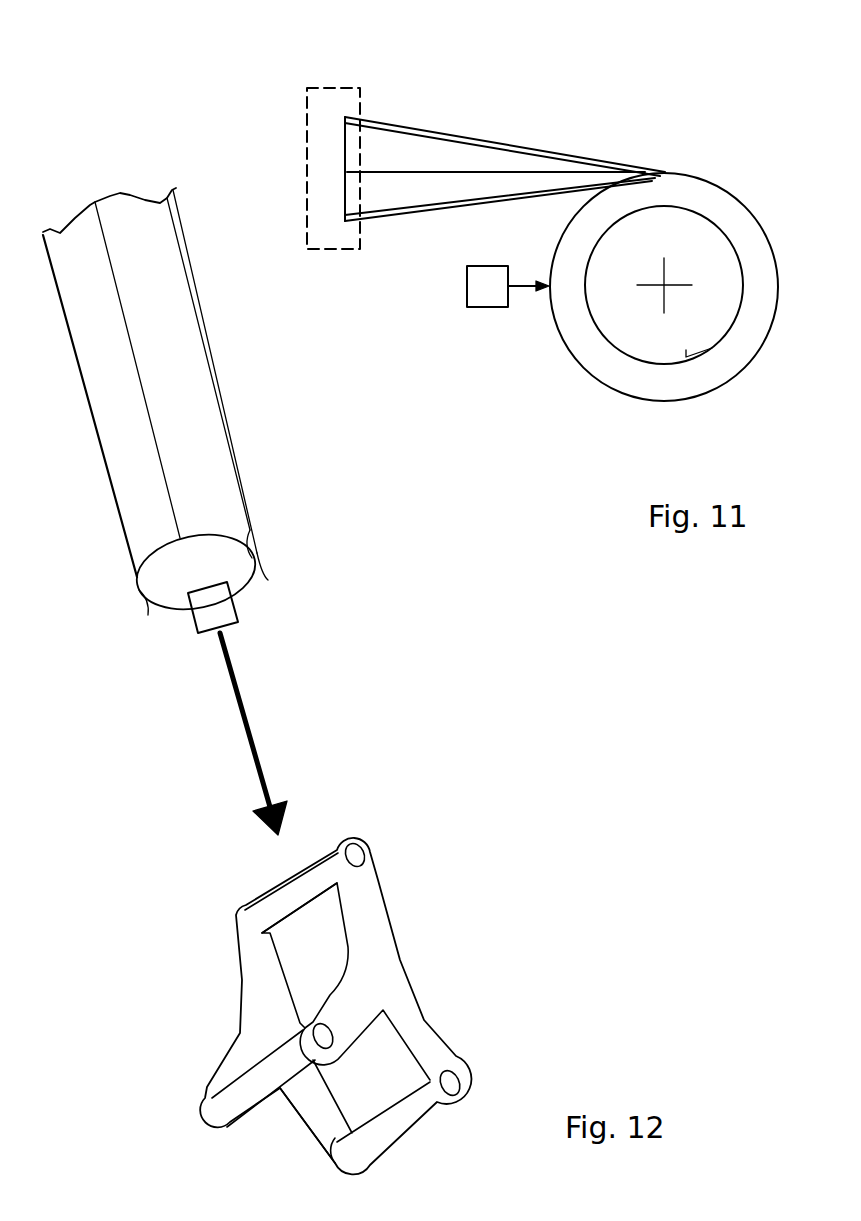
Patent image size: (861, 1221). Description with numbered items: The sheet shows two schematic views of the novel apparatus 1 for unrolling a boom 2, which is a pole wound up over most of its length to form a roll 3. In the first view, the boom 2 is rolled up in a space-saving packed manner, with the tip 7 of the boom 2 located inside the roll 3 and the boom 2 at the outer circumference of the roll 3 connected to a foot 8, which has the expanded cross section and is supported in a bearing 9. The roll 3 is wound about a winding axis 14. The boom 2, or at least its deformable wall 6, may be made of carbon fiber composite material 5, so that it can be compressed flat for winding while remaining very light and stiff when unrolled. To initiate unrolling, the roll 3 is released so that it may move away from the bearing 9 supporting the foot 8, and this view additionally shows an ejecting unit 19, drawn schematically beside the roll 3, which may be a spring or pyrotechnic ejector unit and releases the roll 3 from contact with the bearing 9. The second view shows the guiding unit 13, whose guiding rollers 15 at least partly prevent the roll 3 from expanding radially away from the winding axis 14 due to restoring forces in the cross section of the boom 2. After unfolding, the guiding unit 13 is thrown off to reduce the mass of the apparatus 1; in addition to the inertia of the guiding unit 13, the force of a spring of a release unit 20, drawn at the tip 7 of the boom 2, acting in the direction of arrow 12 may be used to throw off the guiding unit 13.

In FIG. 11, the apparatus 1 is at (660, 98).
In FIG. 11, the boom 2 is at (470, 135).
In FIG. 12, the boom 2 is at (140, 515).
In FIG. 11, the roll 3 is at (740, 202).
In FIG. 12, the carbon fiber composite material 5 is at (258, 562).
In FIG. 12, the deformable wall 6 is at (264, 580).
In FIG. 11, the tip 7 is at (688, 360).
In FIG. 12, the tip 7 is at (178, 610).
In FIG. 11, the foot 8 is at (378, 130).
In FIG. 11, the bearing 9 is at (327, 250).
In FIG. 12, the arrow 12 is at (237, 702).
In FIG. 12, the guiding unit 13 is at (422, 963).
In FIG. 11, the winding axis 14 is at (666, 284).
In FIG. 12, the guiding rollers 15 is at (290, 892).
In FIG. 11, the drive 19 is at (488, 308).
In FIG. 12, the mounting element 20 is at (228, 612).